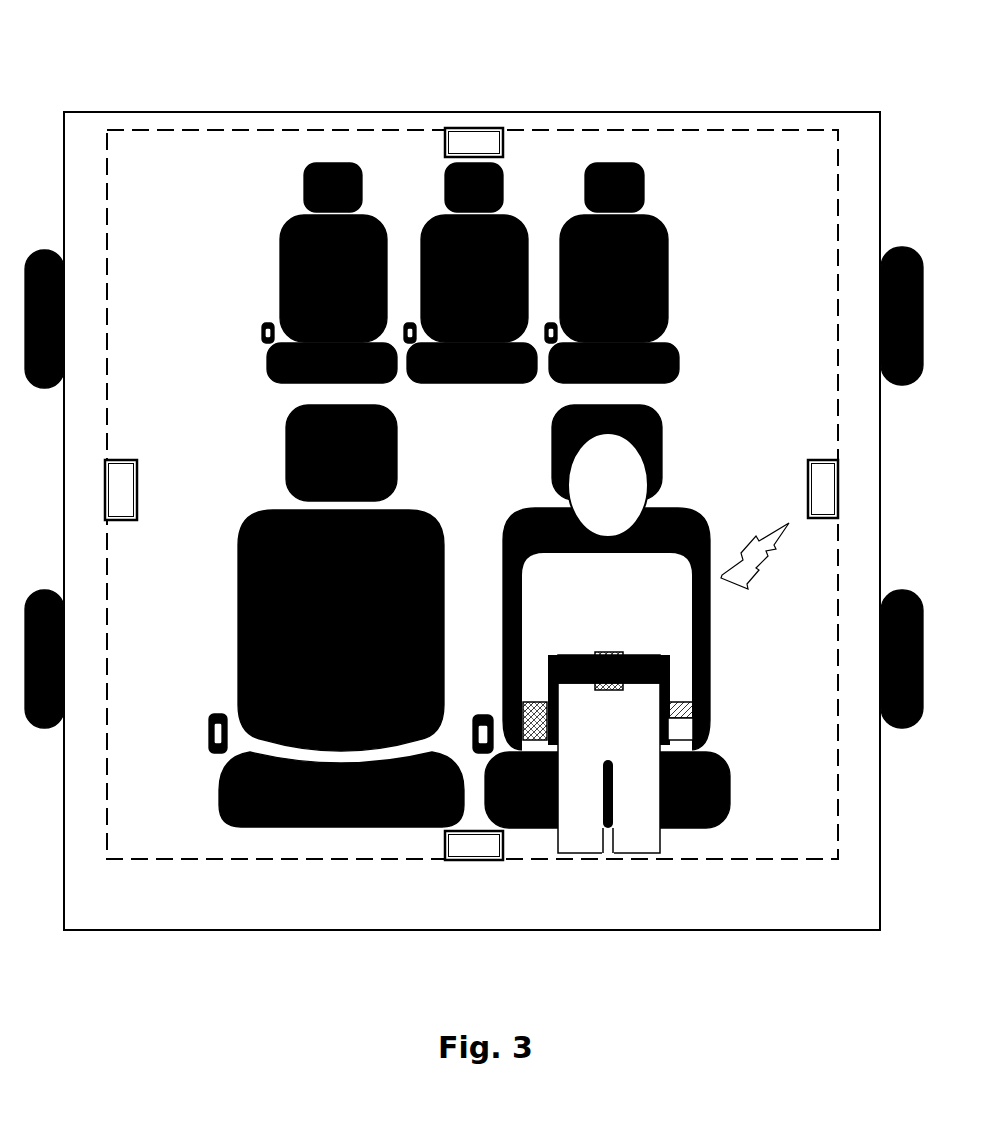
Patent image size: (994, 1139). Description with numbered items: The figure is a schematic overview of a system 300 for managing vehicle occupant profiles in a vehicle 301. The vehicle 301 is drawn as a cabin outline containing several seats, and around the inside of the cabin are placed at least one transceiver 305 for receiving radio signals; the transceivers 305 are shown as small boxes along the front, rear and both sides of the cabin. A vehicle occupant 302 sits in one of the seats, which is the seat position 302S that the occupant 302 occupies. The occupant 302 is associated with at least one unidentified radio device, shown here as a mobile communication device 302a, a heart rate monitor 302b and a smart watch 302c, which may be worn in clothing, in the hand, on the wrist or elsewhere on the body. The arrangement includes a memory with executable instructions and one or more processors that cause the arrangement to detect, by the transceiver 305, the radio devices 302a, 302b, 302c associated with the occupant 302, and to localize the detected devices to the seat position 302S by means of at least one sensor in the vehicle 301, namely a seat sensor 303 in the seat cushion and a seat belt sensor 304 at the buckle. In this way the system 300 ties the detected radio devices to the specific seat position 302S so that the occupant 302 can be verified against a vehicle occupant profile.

The system 300 is at (685, 84).
The vehicle 301 is at (253, 112).
The vehicle occupant 302 is at (608, 485).
The seat position 302S is at (662, 440).
The mobile communication device 302a is at (531, 702).
The heart rate monitor 302b is at (603, 652).
The smart watch 302c is at (676, 702).
The seat sensor 303 is at (713, 755).
The seat belt sensor 304 is at (487, 715).
The transceiver 305 is at (471, 494).